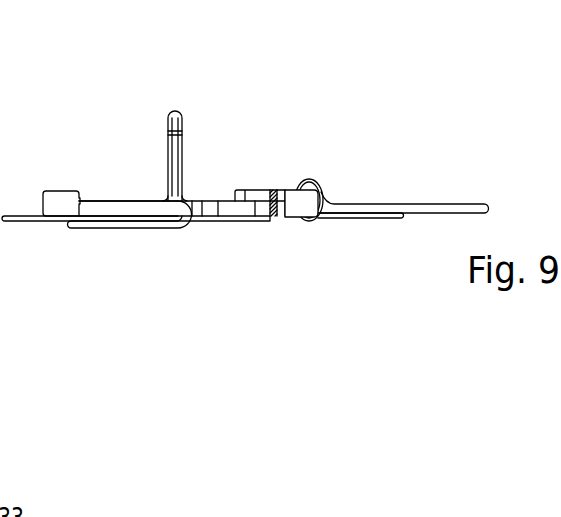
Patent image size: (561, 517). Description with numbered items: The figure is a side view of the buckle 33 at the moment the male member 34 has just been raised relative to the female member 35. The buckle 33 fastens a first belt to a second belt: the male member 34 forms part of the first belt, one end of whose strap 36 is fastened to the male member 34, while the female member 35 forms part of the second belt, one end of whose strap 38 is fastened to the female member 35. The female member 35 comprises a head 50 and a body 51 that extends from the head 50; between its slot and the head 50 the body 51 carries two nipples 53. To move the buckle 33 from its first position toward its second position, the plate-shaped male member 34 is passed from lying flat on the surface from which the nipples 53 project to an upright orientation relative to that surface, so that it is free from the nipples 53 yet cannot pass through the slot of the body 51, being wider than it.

The buckle 33 is at (113, 80).
The male member 34 is at (173, 150).
The female member 35 is at (108, 170).
The strap 36 is at (18, 227).
The strap 38 is at (417, 215).
The head 50 is at (292, 207).
The body 51 is at (130, 207).
The nipples 53 is at (240, 190).